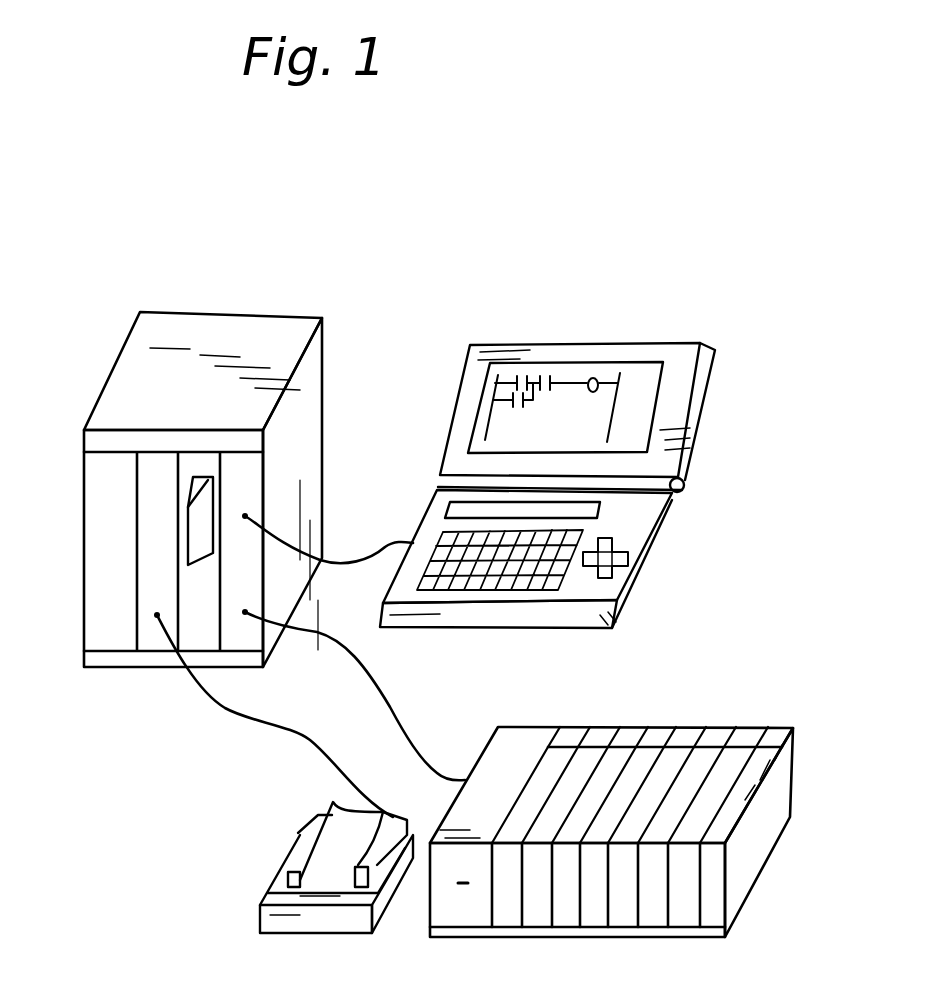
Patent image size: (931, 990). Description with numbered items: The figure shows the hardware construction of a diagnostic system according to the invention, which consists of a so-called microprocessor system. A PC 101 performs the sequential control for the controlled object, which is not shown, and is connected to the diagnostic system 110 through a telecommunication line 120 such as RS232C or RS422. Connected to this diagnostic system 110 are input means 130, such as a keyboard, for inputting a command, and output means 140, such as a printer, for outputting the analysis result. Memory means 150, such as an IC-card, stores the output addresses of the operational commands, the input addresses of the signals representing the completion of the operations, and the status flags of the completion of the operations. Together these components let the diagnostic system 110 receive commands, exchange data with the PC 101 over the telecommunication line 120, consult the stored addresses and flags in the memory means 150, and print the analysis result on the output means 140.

The PC 101 is at (707, 727).
The diagnostic system 110 is at (222, 313).
The telecommunication line 120 is at (390, 700).
The input means 130 is at (695, 440).
The output means 140 is at (272, 887).
The memory means 150 is at (200, 535).